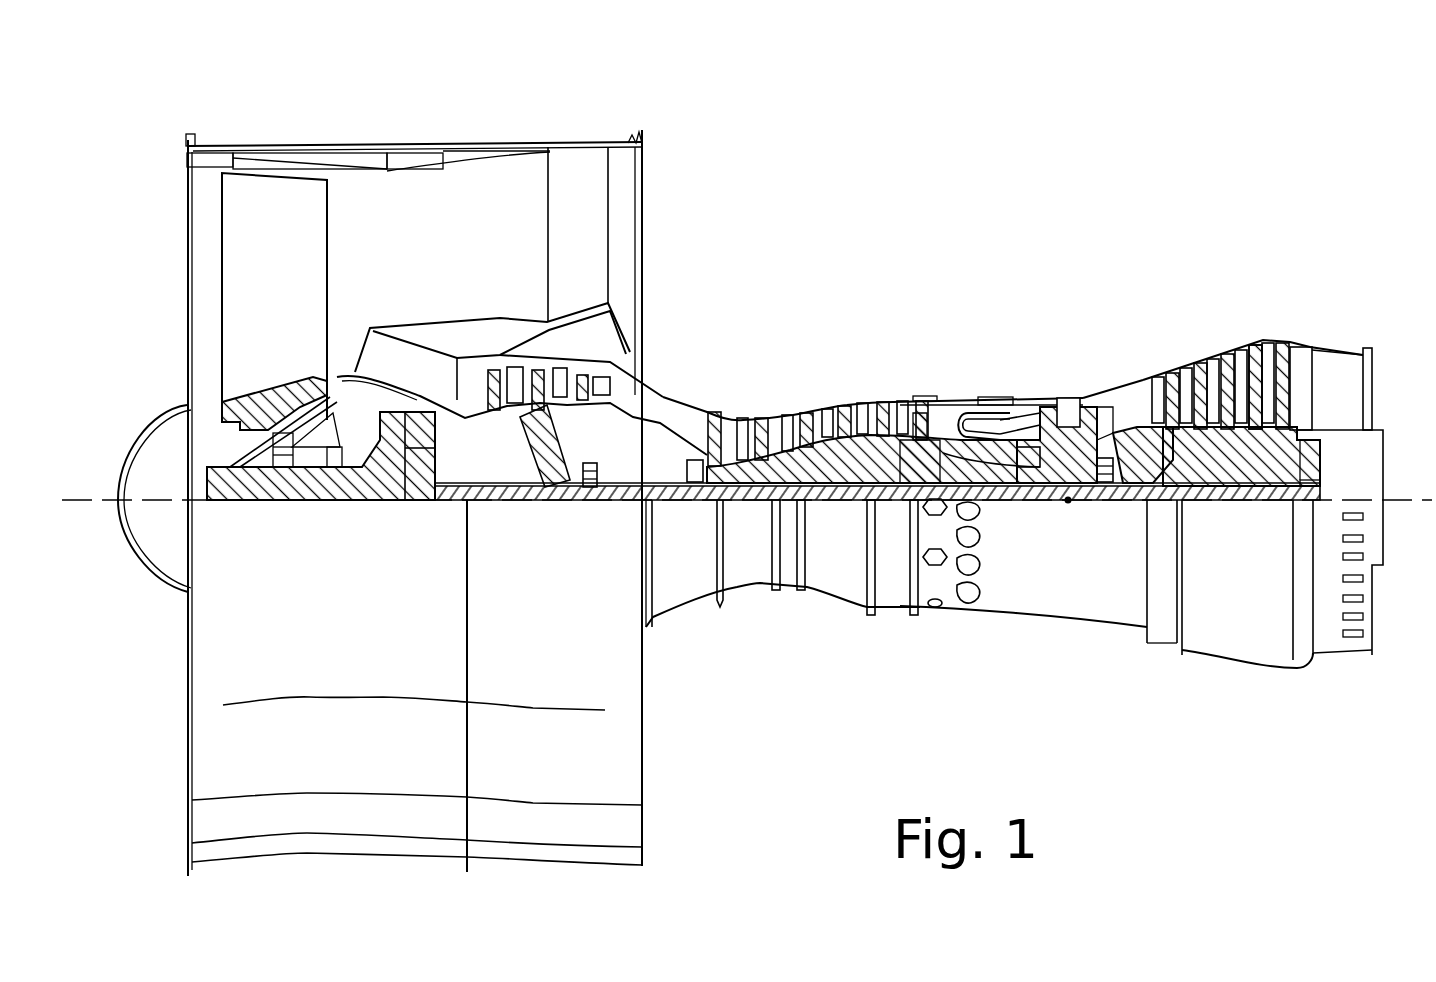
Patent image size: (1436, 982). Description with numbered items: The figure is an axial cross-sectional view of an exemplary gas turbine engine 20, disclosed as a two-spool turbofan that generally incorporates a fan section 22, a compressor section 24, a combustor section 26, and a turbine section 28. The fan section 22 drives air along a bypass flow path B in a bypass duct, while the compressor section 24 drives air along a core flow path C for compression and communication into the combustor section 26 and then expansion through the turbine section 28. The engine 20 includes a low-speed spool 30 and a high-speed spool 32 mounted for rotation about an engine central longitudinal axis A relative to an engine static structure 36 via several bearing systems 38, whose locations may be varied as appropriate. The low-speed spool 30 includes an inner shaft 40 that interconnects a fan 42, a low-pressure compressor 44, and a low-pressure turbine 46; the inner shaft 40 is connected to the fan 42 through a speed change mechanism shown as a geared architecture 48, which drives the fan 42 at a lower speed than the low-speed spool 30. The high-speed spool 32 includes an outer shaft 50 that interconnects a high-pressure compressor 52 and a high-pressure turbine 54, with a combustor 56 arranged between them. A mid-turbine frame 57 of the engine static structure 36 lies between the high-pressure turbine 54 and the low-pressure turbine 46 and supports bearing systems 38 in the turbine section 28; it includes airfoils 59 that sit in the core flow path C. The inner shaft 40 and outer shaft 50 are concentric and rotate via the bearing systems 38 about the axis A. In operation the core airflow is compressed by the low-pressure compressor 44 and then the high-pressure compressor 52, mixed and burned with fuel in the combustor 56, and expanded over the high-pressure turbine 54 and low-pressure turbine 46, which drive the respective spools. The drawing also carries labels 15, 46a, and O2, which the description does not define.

The gas turbine engine 20 is at (1032, 198).
The fan section 22 is at (280, 126).
The fan case / nacelle 15 is at (455, 150).
The fan 42 is at (290, 263).
The low-pressure compressor 44 is at (540, 367).
The compressor section 24 is at (730, 398).
The high-pressure compressor 52 is at (820, 460).
The high-speed spool 32 is at (920, 452).
The combustor section 26 is at (970, 390).
The combustor 56 is at (985, 430).
The high-pressure turbine 54 is at (1073, 400).
The mid-turbine frame 57 is at (1120, 396).
The airfoils 59 is at (1120, 415).
The turbine section 28 is at (1170, 346).
The low-pressure turbine 46 is at (1228, 367).
The turbine blade 46a is at (1255, 355).
The geared architecture 48 is at (408, 488).
The bearing systems 38 is at (590, 470).
The inner shaft 40 is at (655, 505).
The low-speed spool 30 is at (855, 505).
The engine static structure 36 is at (890, 605).
The outer shaft 50 is at (1015, 462).
The outer diameter location O2 is at (1068, 504).
The engine central longitudinal axis A is at (1388, 500).
The bypass flow path B is at (490, 222).
The core flow path C is at (425, 367).